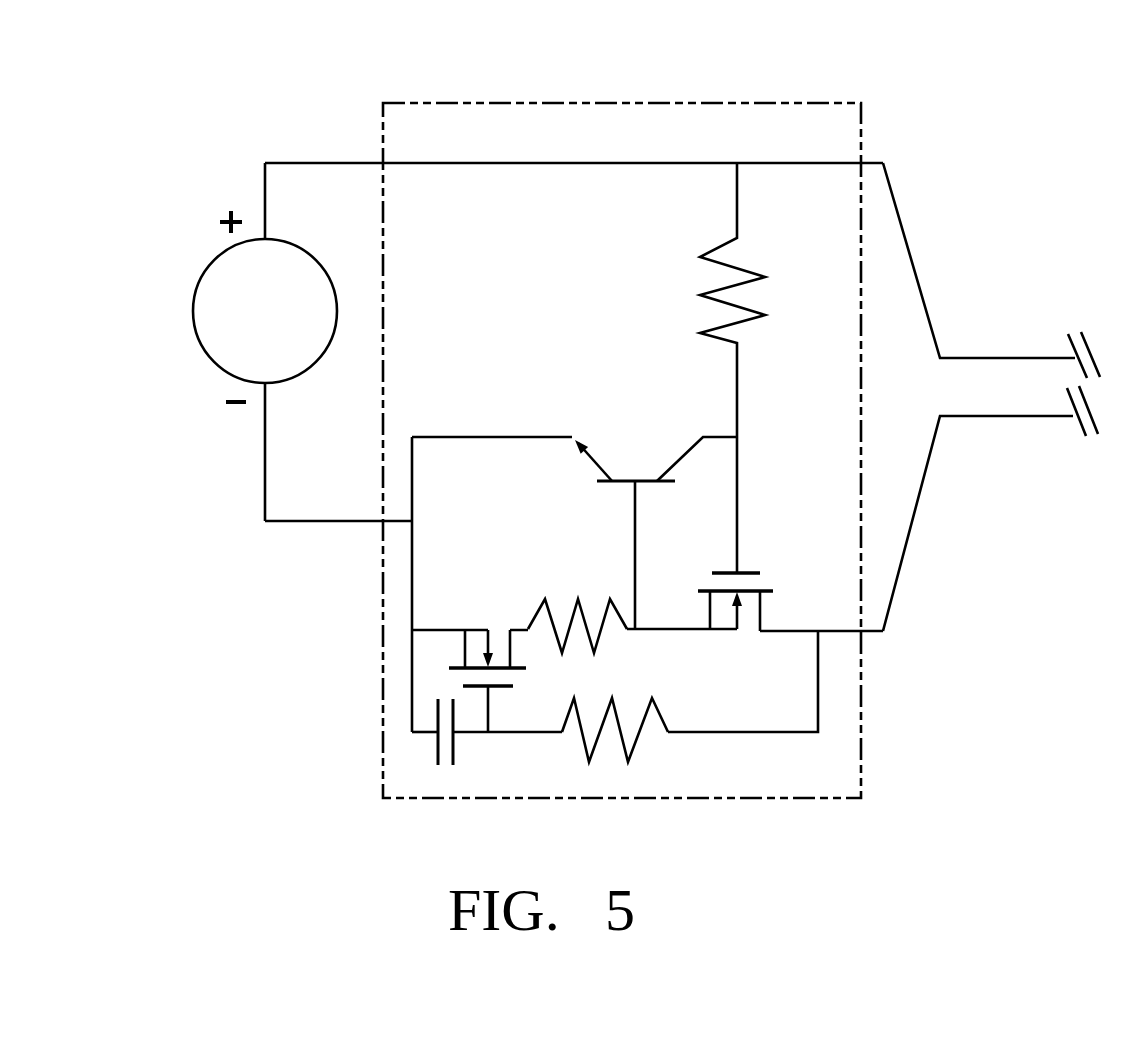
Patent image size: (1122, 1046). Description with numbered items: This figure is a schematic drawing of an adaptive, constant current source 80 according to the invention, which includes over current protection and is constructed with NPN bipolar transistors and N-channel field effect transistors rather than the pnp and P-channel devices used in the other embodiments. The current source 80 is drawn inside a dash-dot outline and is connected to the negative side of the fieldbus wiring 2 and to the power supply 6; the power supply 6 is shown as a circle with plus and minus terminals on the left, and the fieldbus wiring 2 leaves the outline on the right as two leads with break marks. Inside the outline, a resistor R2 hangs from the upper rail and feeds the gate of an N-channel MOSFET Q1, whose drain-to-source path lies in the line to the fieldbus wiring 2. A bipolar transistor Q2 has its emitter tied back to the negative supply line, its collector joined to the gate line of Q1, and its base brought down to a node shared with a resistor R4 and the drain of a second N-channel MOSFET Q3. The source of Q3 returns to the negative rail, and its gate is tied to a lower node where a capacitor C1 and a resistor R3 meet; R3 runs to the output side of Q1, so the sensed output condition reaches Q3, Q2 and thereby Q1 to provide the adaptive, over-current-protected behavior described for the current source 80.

The power supply 6 is at (203, 275).
The adaptive, constant current source 80 is at (862, 116).
The fieldbus wiring 2 is at (922, 287).
The transistor Q1 is at (752, 585).
The transistor Q2 is at (656, 448).
The transistor Q3 is at (470, 656).
The resistor R2 is at (754, 368).
The resistor R3 is at (615, 712).
The resistor R4 is at (577, 604).
The capacitor C1 is at (468, 739).